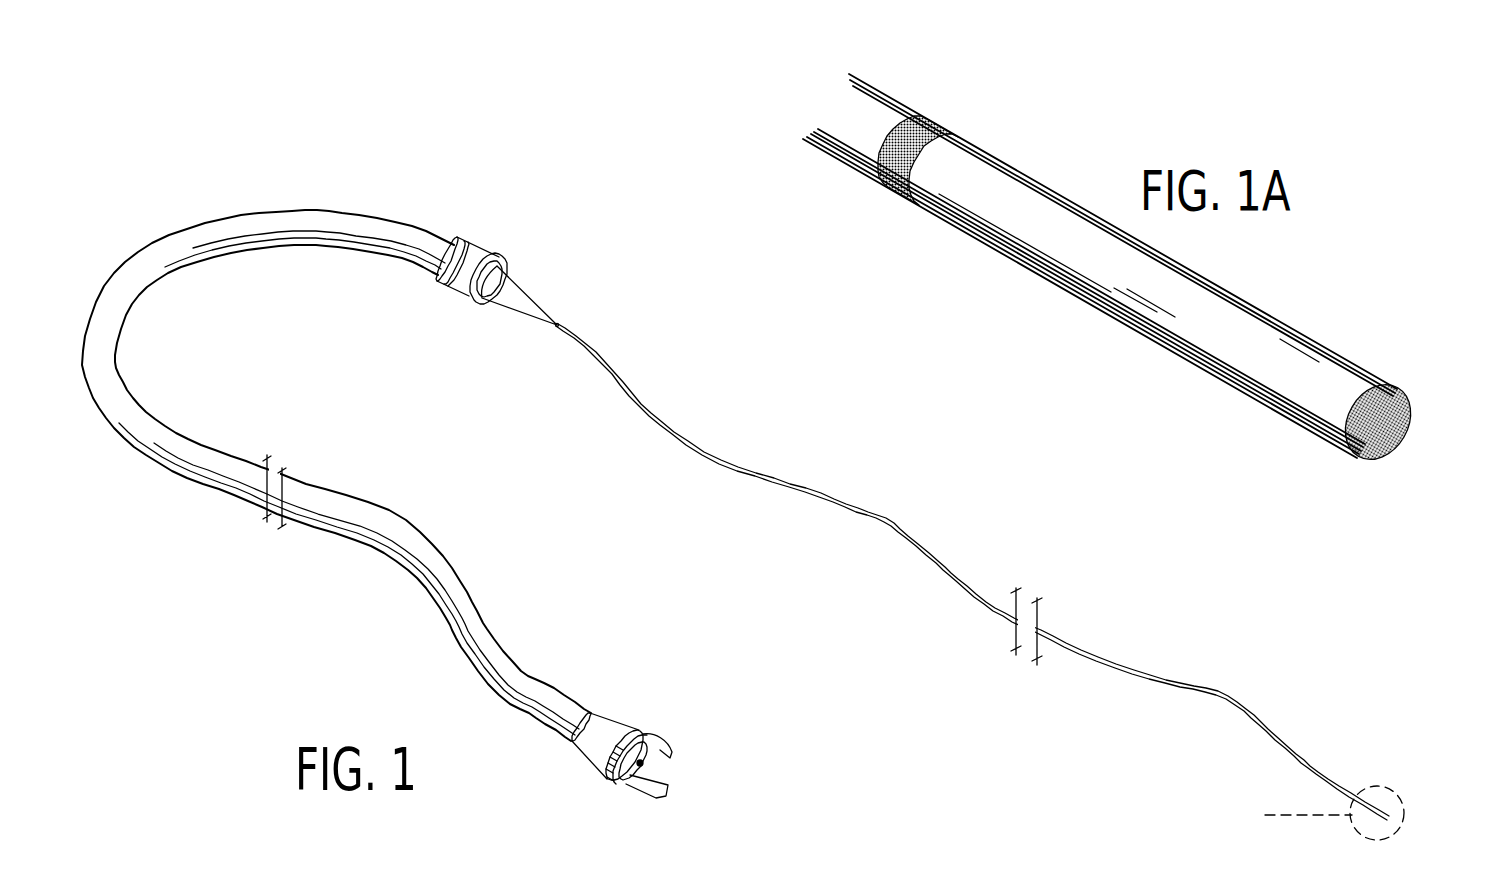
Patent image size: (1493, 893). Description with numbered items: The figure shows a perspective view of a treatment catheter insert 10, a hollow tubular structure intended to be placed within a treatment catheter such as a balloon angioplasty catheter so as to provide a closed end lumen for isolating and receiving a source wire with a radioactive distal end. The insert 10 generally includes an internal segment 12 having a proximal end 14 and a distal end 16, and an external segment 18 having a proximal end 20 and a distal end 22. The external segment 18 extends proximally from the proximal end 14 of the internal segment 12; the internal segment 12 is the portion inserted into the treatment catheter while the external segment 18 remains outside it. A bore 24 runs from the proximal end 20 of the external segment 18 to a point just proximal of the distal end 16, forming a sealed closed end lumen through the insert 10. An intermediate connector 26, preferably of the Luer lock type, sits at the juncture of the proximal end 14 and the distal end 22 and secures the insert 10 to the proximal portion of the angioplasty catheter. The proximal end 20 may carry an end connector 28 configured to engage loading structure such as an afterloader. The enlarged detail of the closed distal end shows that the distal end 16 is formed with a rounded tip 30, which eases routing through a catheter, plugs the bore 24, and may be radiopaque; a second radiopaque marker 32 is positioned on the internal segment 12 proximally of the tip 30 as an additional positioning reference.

In FIG. 1, the treatment catheter insert 10 is at (470, 172).
In FIG. 1, the internal segment 12 is at (803, 492).
In FIG. 1, the proximal end of internal segment 14 is at (560, 328).
In FIG. 1, the distal end of internal segment 16 is at (1403, 803).
In FIG. 1A, the distal end of internal segment 16 is at (1138, 283).
In FIG. 1, the external segment 18 is at (323, 538).
In FIG. 1, the proximal end of external segment 20 is at (560, 720).
In FIG. 1, the distal end of external segment 22 is at (425, 265).
In FIG. 1, the bore 24 is at (618, 777).
In FIG. 1, the intermediate connector 26 is at (497, 253).
In FIG. 1, the end connector 28 is at (665, 731).
In FIG. 1A, the rounded tip 30 is at (1366, 460).
In FIG. 1A, the radiopaque marker 32 is at (895, 190).